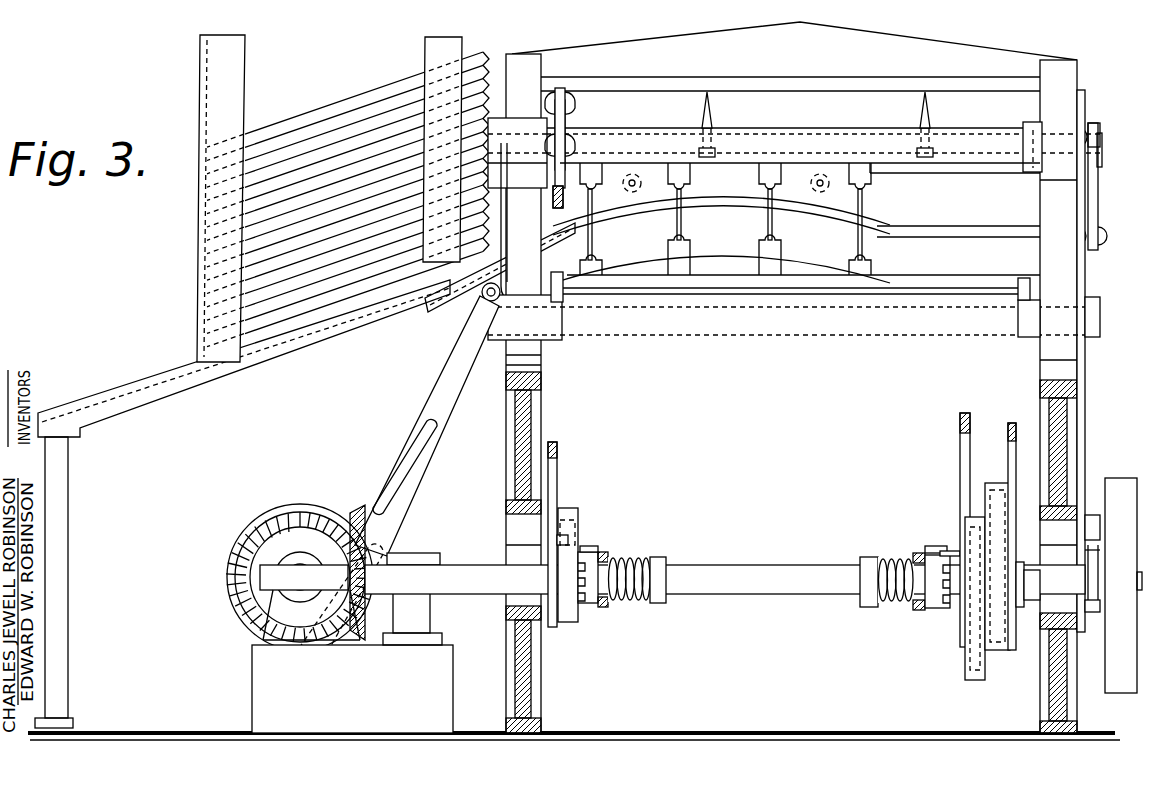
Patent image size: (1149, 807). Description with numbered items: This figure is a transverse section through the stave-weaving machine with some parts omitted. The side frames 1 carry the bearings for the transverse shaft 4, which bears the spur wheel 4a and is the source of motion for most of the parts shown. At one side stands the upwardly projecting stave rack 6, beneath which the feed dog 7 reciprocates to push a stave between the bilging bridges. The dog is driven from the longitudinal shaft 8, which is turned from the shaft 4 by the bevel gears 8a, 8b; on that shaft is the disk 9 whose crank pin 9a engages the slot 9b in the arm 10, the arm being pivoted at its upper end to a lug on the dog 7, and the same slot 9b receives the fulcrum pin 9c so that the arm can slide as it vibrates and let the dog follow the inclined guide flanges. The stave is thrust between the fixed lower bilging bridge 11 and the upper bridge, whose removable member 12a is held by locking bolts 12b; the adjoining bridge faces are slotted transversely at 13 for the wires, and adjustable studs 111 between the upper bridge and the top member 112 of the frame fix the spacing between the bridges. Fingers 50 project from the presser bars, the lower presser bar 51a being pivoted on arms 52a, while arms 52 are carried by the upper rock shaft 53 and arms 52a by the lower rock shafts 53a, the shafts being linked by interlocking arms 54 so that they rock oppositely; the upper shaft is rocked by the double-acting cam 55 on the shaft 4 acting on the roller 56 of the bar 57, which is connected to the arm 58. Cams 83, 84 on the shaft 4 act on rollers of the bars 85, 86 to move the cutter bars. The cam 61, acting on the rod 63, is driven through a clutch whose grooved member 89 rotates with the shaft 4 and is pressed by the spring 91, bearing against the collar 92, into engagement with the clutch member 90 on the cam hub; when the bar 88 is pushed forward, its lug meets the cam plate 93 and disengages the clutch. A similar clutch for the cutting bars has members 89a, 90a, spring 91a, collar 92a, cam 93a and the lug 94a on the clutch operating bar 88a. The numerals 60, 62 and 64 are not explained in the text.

The side frame 1 is at (518, 412).
The transverse shaft 4 is at (725, 579).
The spur wheel 4a is at (1121, 478).
The stave rack 6 is at (343, 198).
The feed dog 7 is at (482, 296).
The longitudinal shaft 8 is at (300, 577).
The bevel gear 8a is at (358, 515).
The bevel gear 8b is at (265, 512).
The disk 9 is at (307, 512).
The crank pin 9a is at (340, 598).
The slot 9b is at (405, 490).
The fulcrum pin 9c is at (312, 672).
The arm 10 is at (452, 372).
The lower bilging bridge 11 is at (796, 240).
The removable upper bridge member 12a is at (800, 194).
The locking bolt 12b is at (741, 188).
The transverse slot 13 is at (739, 219).
The finger 50 is at (742, 218).
The lower presser bar 51a is at (645, 286).
The arm 52 is at (530, 124).
The arm 52a is at (563, 290).
The upper rock shaft 53 is at (636, 128).
The lower rock shaft 53a is at (562, 318).
The interlocking arm 54 is at (507, 215).
The double-acting cam 55 is at (1094, 515).
The roller 56 is at (1094, 572).
The bar 57 is at (1085, 426).
The arm 58 is at (1092, 123).
The bolt 60 is at (567, 116).
The cam 61 is at (571, 510).
The key 62 is at (556, 540).
The rod 63 is at (557, 466).
The bolt 64 is at (568, 95).
The double-acting cam 83 is at (970, 517).
The double-acting cam 84 is at (997, 483).
The bar 85 is at (960, 450).
The bar 86 is at (1010, 460).
The bar 88 is at (605, 550).
The clutch operating bar 88a is at (918, 610).
The clutch member 89 is at (603, 608).
The clutch member 89a is at (922, 612).
The clutch member 90 is at (582, 603).
The clutch member 90a is at (945, 606).
The spring 91 is at (628, 558).
The spring 91a is at (892, 559).
The collar 92 is at (660, 557).
The collar 92a is at (868, 607).
The cam plate 93 is at (594, 546).
The cam 93a is at (950, 551).
The cam-engaging lug 94a is at (930, 546).
The stud 111 is at (712, 112).
The top member 112 is at (795, 48).